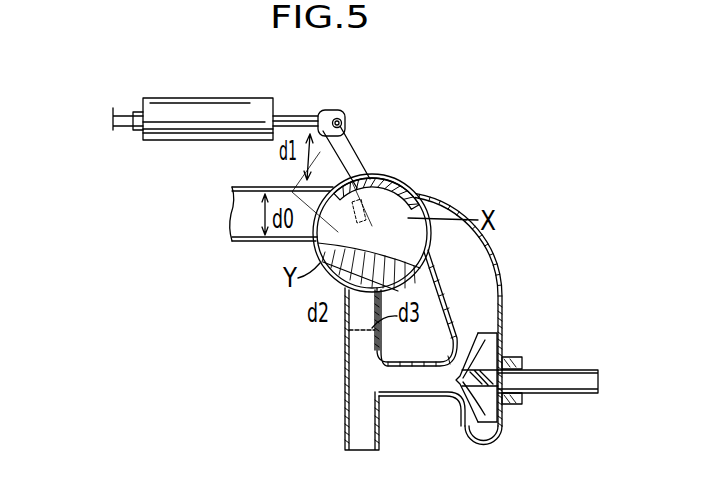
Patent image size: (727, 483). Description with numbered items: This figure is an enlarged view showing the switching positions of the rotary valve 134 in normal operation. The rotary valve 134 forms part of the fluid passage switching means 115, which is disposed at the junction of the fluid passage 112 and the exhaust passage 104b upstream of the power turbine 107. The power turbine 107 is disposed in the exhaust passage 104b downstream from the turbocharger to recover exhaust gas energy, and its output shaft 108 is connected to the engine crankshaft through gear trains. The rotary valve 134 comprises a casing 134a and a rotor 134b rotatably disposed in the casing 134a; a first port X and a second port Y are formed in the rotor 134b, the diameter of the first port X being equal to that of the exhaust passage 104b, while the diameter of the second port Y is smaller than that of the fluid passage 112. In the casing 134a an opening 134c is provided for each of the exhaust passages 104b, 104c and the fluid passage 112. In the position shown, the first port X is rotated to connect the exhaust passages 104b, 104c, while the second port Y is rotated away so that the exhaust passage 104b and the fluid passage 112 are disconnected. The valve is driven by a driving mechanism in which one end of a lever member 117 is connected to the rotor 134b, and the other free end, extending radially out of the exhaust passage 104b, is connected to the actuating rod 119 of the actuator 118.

The fluid passage switching means 115 is at (432, 106).
The lever member 117 is at (351, 152).
The actuator 118 is at (240, 98).
The actuating rod 119 is at (306, 116).
The rotary valve 134 is at (393, 170).
The casing 134a is at (396, 184).
The rotor 134b is at (410, 208).
The opening 134c is at (290, 186).
The exhaust passage 104b is at (250, 217).
The exhaust passage 104c is at (496, 302).
The fluid passage 112 is at (342, 377).
The power turbine 107 is at (502, 424).
The output shaft 108 is at (578, 371).